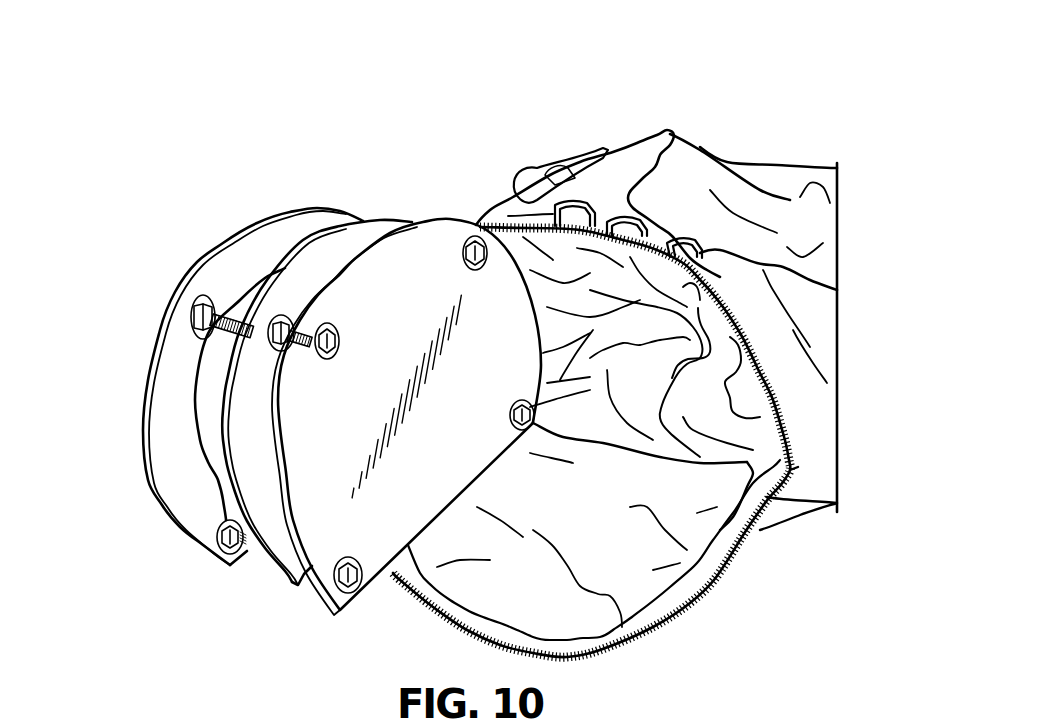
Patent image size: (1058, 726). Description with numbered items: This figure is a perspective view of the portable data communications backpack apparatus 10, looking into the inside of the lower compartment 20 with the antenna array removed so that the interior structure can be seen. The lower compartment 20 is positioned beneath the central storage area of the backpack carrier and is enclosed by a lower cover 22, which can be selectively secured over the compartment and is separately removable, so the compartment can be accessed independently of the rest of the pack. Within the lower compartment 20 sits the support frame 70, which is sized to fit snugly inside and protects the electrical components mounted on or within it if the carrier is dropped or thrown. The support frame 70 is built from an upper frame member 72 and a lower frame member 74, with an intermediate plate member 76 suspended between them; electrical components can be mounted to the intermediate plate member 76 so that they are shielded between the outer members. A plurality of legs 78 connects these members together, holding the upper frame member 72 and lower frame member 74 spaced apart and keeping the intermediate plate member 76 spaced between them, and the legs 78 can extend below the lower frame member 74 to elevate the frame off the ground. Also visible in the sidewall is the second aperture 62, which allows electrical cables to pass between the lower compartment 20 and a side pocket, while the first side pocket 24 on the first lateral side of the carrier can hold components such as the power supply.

The portable data communications backpack apparatus 10 is at (860, 193).
The lower compartment 20 is at (700, 394).
The lower cover 22 is at (653, 590).
The first side pocket 24 is at (823, 310).
The second aperture 62 is at (592, 336).
The support frame 70 is at (295, 344).
The upper frame member 72 is at (437, 237).
The lower frame member 74 is at (277, 238).
The intermediate plate member 76 is at (363, 230).
The plurality of legs 78 is at (197, 328).